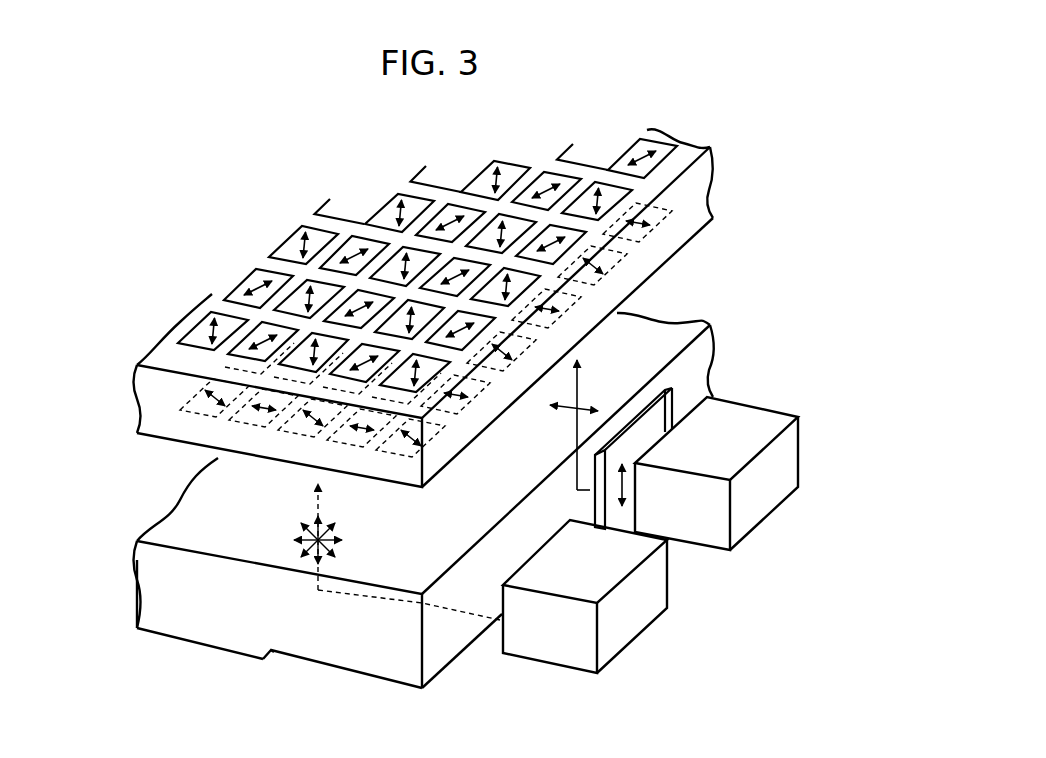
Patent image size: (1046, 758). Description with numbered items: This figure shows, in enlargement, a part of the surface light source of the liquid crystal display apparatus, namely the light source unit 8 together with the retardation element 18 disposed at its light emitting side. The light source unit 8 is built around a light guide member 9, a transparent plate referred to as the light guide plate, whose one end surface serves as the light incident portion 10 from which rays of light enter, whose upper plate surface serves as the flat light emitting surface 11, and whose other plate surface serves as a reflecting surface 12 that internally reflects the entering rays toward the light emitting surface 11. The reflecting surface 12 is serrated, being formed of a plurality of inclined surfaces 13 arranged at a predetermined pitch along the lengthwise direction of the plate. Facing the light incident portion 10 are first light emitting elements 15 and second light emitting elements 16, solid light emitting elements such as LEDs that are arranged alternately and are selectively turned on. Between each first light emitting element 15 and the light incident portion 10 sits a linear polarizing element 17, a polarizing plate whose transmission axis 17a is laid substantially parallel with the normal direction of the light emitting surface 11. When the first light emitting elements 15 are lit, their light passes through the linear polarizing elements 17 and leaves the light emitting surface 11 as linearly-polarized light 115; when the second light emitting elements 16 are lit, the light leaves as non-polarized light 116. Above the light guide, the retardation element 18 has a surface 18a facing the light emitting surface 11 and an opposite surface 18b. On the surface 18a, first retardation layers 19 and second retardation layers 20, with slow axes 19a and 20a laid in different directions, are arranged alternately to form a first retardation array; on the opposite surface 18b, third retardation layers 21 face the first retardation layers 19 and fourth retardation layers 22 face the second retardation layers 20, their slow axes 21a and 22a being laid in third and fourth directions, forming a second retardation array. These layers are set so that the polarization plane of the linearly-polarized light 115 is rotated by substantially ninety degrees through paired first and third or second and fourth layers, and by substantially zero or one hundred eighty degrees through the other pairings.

The light source unit 8 is at (752, 376).
The light guide member 9 is at (179, 629).
The light incident portion 10 is at (448, 664).
The light emitting surface 11 is at (172, 532).
The reflecting surface 12 is at (348, 674).
The inclined surfaces 13 is at (288, 656).
The first light emitting elements 15 is at (762, 500).
The second light emitting elements 16 is at (637, 623).
The linear polarizing elements 17 is at (650, 432).
The transmission axis 17a is at (626, 485).
The retardation element 18 is at (703, 191).
The surface facing the light source unit 18a is at (441, 472).
The opposite surface 18b is at (683, 143).
The first retardation layers 19 is at (178, 420).
The slow axis of first retardation layers 19a is at (411, 452).
The second retardation layers 20 is at (232, 427).
The slow axis of second retardation layers 20a is at (362, 436).
The third retardation layers 21 is at (402, 192).
The slow axis of third retardation layers 21a is at (399, 200).
The fourth retardation layers 22 is at (256, 276).
The slow axis of fourth retardation layers 22a is at (250, 290).
The linearly-polarized light 115 is at (575, 423).
The non-polarized light 116 is at (321, 510).